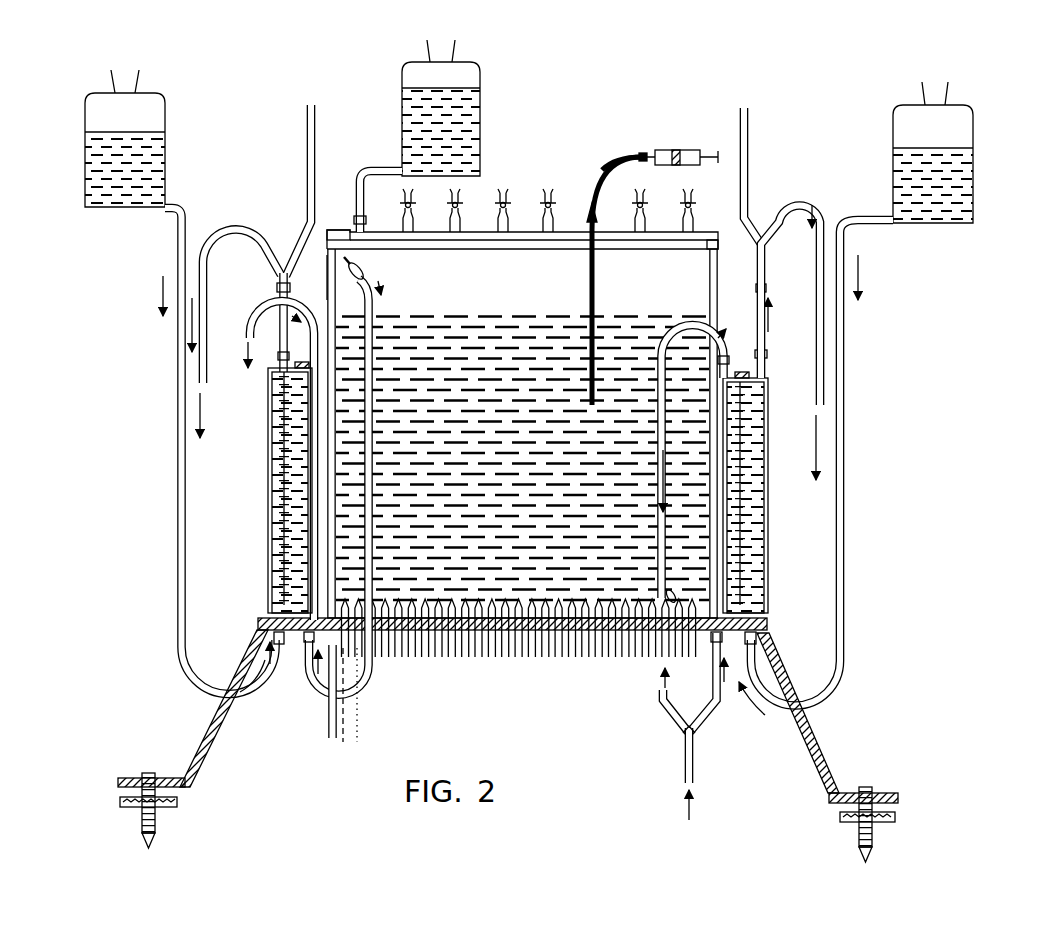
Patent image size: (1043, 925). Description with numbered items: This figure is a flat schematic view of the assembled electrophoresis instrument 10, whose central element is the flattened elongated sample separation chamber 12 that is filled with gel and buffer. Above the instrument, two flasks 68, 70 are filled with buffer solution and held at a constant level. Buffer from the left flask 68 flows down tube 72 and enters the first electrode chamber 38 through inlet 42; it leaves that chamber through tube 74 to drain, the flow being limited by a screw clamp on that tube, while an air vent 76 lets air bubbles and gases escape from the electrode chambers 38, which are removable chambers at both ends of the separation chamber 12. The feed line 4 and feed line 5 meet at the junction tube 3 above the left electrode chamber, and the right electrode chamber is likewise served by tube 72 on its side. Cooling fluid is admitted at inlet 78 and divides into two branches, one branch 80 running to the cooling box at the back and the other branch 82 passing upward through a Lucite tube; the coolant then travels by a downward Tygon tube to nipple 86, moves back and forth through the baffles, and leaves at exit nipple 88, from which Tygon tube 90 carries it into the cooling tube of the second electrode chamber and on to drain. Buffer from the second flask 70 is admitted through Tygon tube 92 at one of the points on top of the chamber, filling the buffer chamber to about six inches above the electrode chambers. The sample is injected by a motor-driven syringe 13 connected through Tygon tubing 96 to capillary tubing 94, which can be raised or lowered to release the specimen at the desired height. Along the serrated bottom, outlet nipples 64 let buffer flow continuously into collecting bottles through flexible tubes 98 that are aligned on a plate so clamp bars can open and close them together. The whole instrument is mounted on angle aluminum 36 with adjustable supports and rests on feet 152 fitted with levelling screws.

The Y-junction tube 3 is at (262, 310).
The feed tube 4 is at (243, 228).
The feed tube 5 is at (314, 143).
The instrument 10 is at (467, 287).
The sample separation chamber 12 is at (543, 287).
The syringe 13 is at (670, 150).
The angle aluminum 36 is at (820, 750).
The electrode chamber 38 is at (280, 460).
The inlet 42 is at (762, 640).
The outlet nipples 64 is at (478, 658).
The flask 68 is at (165, 166).
The flask 70 is at (480, 150).
The tube 72 is at (178, 342).
The tube 74 is at (828, 172).
The air vent 76 is at (748, 131).
The inlet 78 is at (684, 766).
The branch 80 is at (662, 680).
The branch 82 is at (720, 700).
The nipple 86 is at (675, 585).
The exit nipple 88 is at (365, 269).
The Tygon tube 90 is at (372, 504).
The Tygon tube 92 is at (362, 168).
The capillary tubing 94 is at (596, 288).
The Tygon tubing 96 is at (603, 152).
The flexible tubes 98 is at (328, 720).
The feet 152 is at (897, 799).